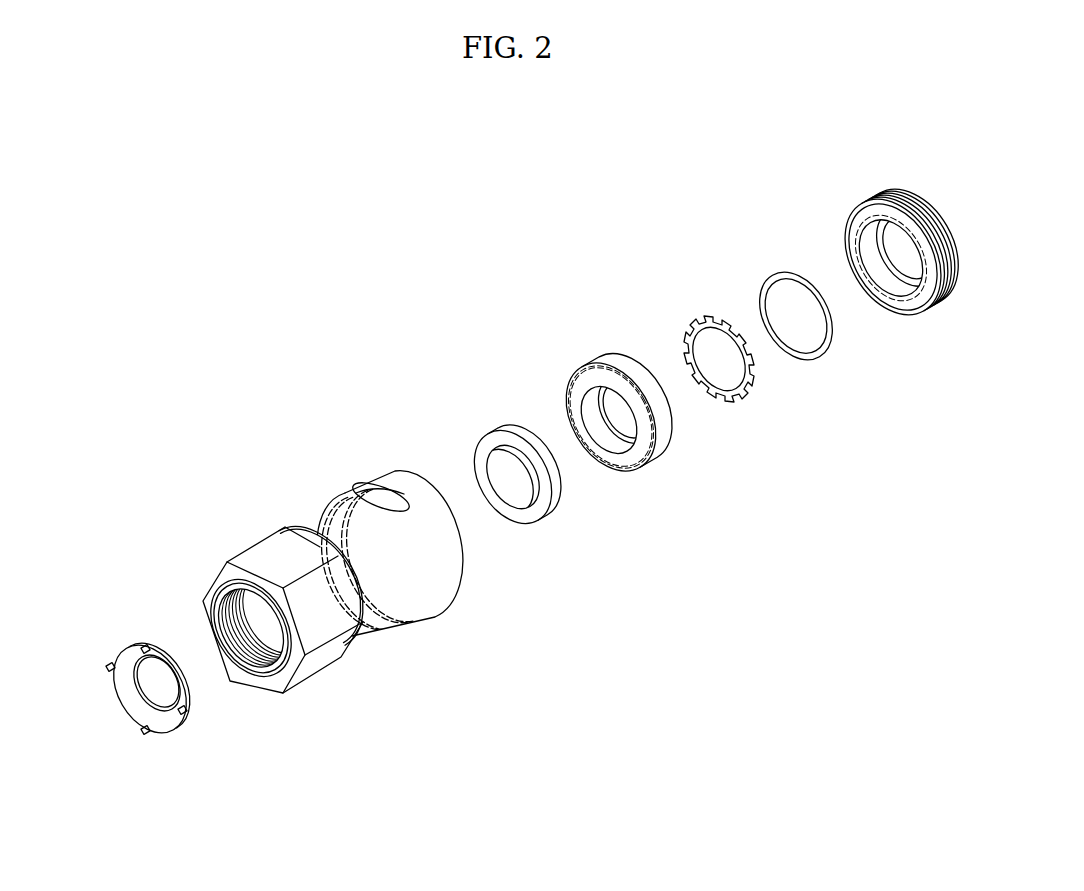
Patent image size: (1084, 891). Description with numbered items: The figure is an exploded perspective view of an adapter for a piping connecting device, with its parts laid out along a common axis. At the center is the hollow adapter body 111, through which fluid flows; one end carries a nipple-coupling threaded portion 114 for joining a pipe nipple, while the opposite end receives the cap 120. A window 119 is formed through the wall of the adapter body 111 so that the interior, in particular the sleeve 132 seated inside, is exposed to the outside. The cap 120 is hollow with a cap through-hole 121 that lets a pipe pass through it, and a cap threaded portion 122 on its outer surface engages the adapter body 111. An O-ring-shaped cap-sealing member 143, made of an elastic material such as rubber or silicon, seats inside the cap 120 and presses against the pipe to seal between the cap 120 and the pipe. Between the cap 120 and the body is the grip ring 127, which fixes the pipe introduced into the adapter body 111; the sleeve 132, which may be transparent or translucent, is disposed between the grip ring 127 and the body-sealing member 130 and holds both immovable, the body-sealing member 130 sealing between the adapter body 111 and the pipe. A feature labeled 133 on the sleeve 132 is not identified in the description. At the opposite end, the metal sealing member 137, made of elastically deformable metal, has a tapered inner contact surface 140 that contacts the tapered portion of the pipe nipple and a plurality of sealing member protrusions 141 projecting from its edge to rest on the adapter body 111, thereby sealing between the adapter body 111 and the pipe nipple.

The adapter body 111 is at (328, 582).
The nipple-coupling threaded portion 114 is at (261, 682).
The window 119 is at (384, 490).
The cap 120 is at (892, 237).
The cap through-hole 121 is at (904, 269).
The cap threaded portion 122 is at (862, 188).
The grip ring 127 is at (680, 299).
The body-sealing member 130 is at (513, 431).
The sleeve 132 is at (607, 406).
The inner shoulder 133 is at (629, 429).
The metal sealing member 137 is at (122, 648).
The inner contact surface 140 is at (129, 704).
The sealing member protrusions 141 is at (108, 665).
The cap-sealing member 143 is at (779, 276).